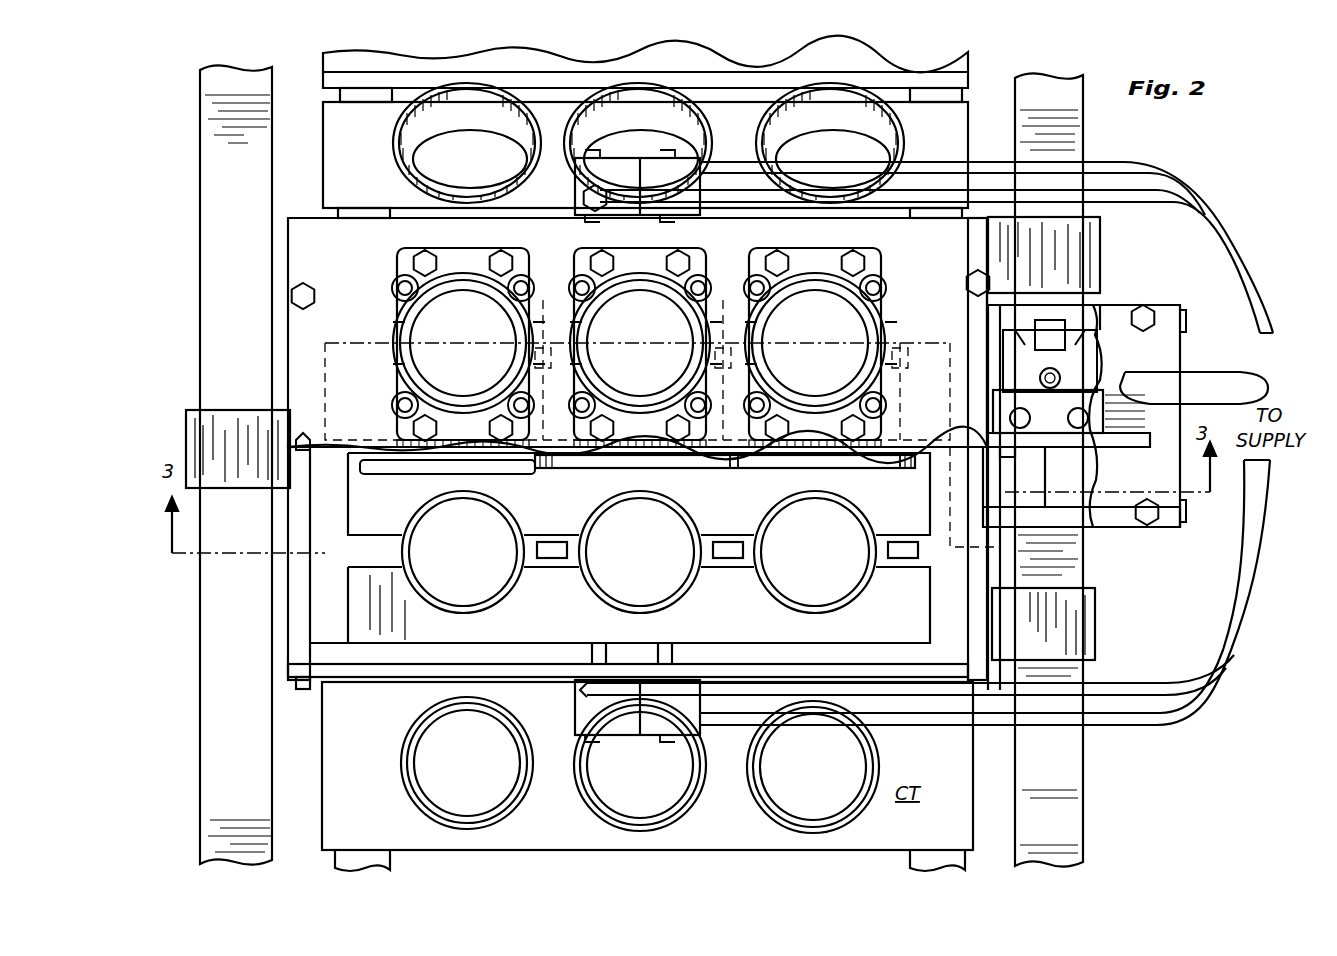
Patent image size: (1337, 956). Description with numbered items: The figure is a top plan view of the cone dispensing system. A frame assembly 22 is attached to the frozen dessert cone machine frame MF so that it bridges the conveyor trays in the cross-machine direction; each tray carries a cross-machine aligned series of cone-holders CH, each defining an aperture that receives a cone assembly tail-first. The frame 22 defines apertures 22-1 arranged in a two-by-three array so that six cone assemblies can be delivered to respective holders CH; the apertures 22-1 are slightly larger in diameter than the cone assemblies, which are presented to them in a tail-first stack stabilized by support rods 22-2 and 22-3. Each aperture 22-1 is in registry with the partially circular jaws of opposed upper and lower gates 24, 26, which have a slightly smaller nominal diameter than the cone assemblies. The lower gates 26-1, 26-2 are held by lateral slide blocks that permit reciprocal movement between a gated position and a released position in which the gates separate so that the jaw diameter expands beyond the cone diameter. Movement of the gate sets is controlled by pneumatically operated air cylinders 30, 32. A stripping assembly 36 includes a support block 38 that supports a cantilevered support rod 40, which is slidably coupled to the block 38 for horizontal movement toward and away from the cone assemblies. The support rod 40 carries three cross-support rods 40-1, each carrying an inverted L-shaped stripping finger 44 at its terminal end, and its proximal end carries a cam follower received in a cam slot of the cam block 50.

The frame assembly 22 is at (638, 340).
The apertures 22-1 is at (395, 320).
The support rod 22-2 is at (405, 286).
The support rod 22-3 is at (402, 400).
The upper gate 24 is at (512, 365).
The lower gate 26 is at (418, 530).
The lower gate 26-1 is at (447, 479).
The lower gate 26-2 is at (543, 601).
The air cylinder 30 is at (924, 446).
The air cylinder 32 is at (935, 446).
The stripping assembly 36 is at (1107, 330).
The support block 38 is at (1010, 400).
The support rod 40 is at (845, 468).
The cross-support rods 40-1 is at (536, 468).
The stripping finger 44 is at (545, 340).
The cam block 50 is at (1081, 480).
The cone-holders CH is at (405, 162).
The machine frame MF is at (643, 465).